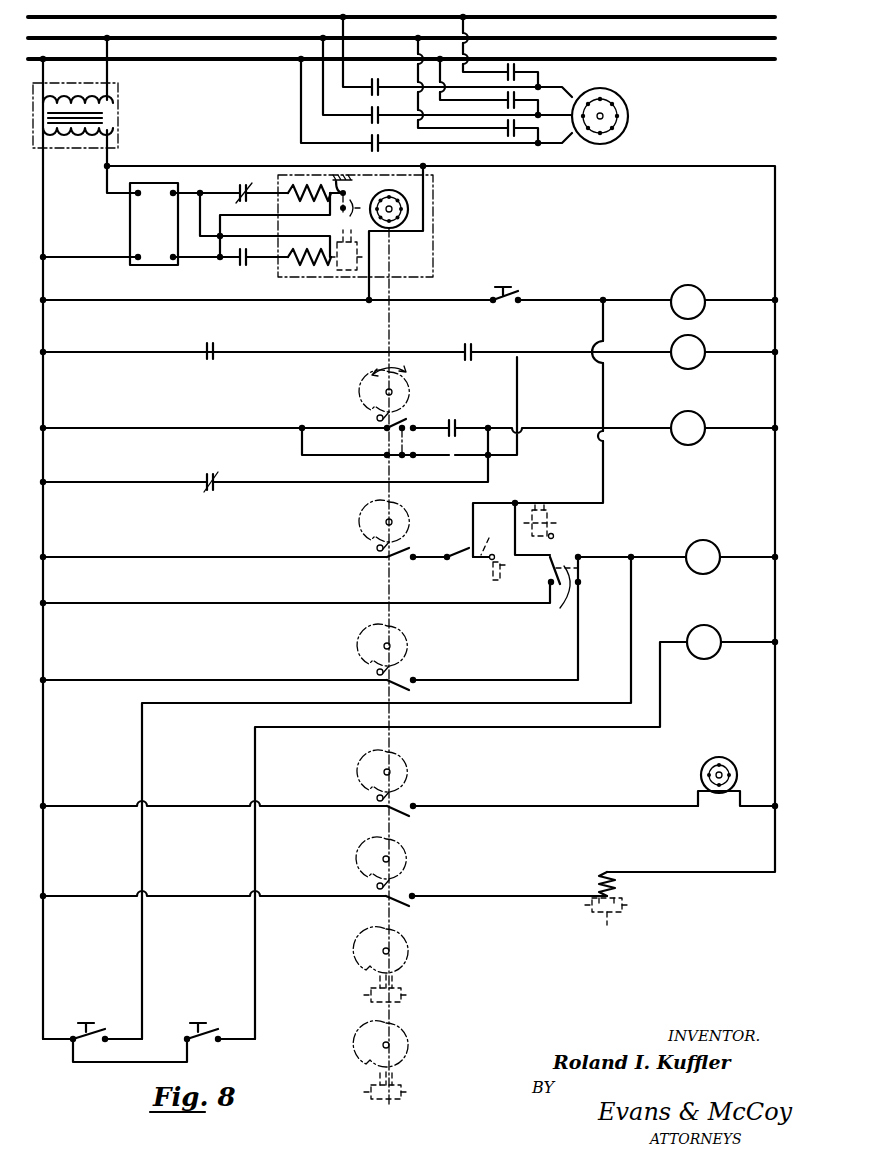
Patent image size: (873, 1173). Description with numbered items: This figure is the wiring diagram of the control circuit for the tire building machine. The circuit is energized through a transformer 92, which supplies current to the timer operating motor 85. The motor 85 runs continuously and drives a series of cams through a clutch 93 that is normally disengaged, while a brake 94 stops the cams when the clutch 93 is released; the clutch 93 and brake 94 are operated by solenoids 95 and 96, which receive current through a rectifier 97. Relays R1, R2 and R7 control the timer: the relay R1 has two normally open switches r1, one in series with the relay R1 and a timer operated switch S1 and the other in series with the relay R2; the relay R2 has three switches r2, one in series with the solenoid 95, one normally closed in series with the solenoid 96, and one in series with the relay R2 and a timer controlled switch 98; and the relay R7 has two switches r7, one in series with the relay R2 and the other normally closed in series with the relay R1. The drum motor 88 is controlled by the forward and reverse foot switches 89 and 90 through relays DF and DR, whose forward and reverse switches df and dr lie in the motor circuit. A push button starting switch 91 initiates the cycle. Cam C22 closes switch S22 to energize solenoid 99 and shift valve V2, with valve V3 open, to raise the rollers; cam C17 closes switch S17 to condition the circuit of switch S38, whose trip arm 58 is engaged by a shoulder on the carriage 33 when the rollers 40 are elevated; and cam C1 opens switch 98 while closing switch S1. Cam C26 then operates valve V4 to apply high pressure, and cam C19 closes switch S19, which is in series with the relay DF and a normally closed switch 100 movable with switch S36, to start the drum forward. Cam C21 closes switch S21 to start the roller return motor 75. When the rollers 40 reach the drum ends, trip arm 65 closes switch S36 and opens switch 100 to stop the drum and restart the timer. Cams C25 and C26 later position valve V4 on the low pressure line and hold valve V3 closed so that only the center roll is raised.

The transformer 92 is at (121, 125).
The rectifier 97 is at (130, 232).
The solenoid 96 is at (292, 185).
The solenoid 95 is at (289, 270).
The brake 94 is at (338, 182).
The clutch 93 is at (345, 272).
The timer operating motor 85 is at (408, 203).
The electric motor 88 is at (628, 108).
The starting switch 91 is at (514, 292).
The timer controlled switch 98 is at (388, 461).
The rollers 40 is at (551, 510).
The trip arm 58 is at (496, 538).
The carriage 33 is at (513, 577).
The trip arm 65 is at (562, 548).
The switch 100 is at (580, 569).
The roller return motor 75 is at (725, 757).
The solenoid 99 is at (600, 877).
The forward foot switch 89 is at (96, 1030).
The reverse foot switch 90 is at (208, 1044).
The forward switches df is at (435, 82).
The reverse switches dr is at (525, 72).
The switches r1 is at (409, 375).
The switches r2 is at (243, 226).
The switches r7 is at (212, 394).
The relay R1 is at (700, 415).
The relay R2 is at (700, 341).
The relay R7 is at (672, 293).
The relay DF is at (715, 546).
The relay DR is at (717, 632).
The timer cam C1 is at (410, 389).
The timer operated switch S1 is at (380, 418).
The timer cam C17 is at (412, 531).
The switch S17 is at (389, 567).
The switch S38 is at (460, 569).
The control switch S36 is at (539, 626).
The timer cam C19 is at (367, 644).
The switch S19 is at (410, 689).
The timer cam C21 is at (412, 760).
The switch S21 is at (410, 816).
The timer cam C22 is at (410, 852).
The switch S22 is at (410, 906).
The timer cam C25 is at (410, 956).
The timer cam C26 is at (410, 1043).
The valve V2 is at (607, 923).
The valve V3 is at (370, 1001).
The valve V4 is at (376, 1101).